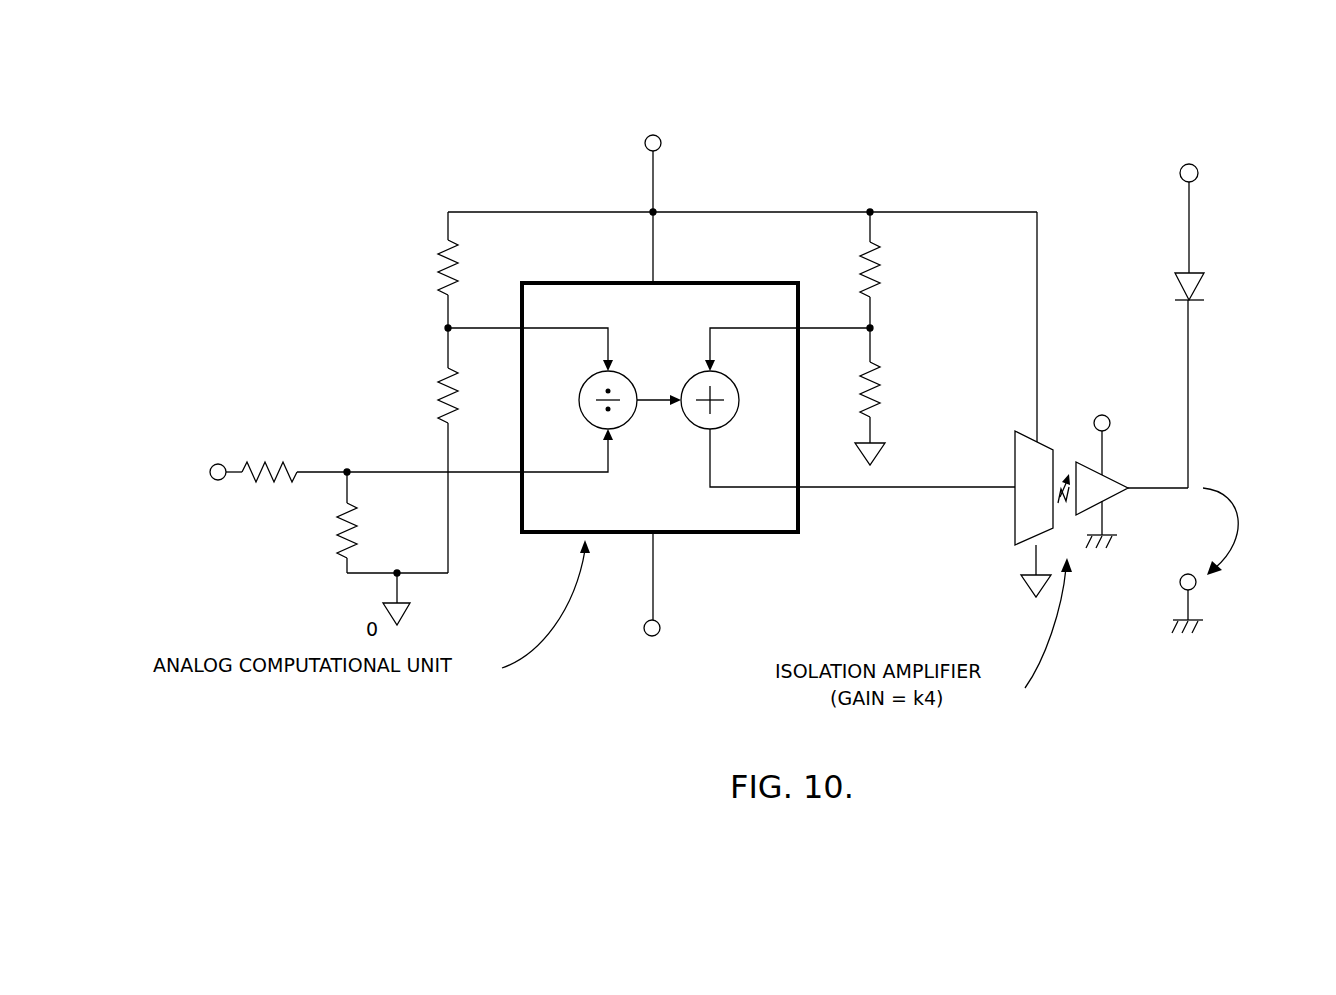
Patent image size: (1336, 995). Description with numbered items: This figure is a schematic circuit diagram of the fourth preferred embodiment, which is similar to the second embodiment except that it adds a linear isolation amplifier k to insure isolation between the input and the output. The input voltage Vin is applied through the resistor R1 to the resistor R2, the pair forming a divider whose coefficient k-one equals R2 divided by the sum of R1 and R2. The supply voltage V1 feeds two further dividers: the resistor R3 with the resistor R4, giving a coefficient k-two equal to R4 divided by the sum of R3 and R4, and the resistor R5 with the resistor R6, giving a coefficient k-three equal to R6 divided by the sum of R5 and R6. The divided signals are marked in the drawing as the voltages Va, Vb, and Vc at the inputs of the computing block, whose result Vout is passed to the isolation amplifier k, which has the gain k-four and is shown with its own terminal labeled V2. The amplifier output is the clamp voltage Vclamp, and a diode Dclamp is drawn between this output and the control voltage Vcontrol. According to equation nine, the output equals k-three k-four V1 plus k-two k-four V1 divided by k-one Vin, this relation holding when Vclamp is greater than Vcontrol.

The resistor R1 is at (269, 455).
The resistor R2 is at (392, 521).
The resistor R3 is at (424, 271).
The resistor R4 is at (424, 450).
The resistor R5 is at (888, 271).
The resistor R6 is at (886, 396).
The input voltage Vin is at (210, 456).
The supply voltage V1 is at (669, 200).
The supply voltage V2 terminal V2 is at (1103, 462).
The voltage Va input of analog computational unit Va is at (530, 334).
The voltage Vb input of analog computational unit Vb is at (455, 450).
The voltage Vc input of analog computational unit Vc is at (787, 334).
The output voltage of analog computational unit Vout is at (862, 458).
The linear isolation amplifier gain k is at (1066, 410).
The clamp diode Dclamp is at (1234, 335).
The control voltage Vcontrol is at (1233, 163).
The clamp voltage Vclamp is at (1244, 560).